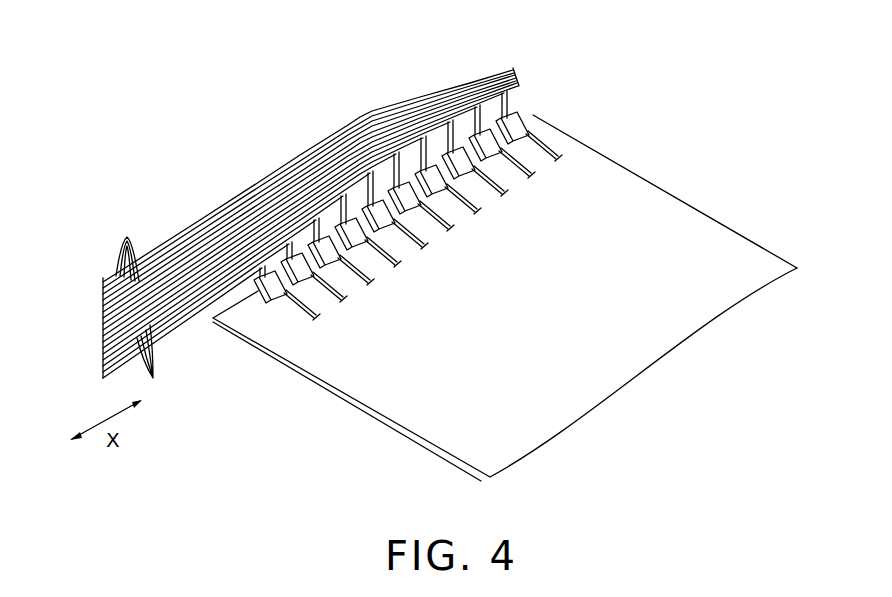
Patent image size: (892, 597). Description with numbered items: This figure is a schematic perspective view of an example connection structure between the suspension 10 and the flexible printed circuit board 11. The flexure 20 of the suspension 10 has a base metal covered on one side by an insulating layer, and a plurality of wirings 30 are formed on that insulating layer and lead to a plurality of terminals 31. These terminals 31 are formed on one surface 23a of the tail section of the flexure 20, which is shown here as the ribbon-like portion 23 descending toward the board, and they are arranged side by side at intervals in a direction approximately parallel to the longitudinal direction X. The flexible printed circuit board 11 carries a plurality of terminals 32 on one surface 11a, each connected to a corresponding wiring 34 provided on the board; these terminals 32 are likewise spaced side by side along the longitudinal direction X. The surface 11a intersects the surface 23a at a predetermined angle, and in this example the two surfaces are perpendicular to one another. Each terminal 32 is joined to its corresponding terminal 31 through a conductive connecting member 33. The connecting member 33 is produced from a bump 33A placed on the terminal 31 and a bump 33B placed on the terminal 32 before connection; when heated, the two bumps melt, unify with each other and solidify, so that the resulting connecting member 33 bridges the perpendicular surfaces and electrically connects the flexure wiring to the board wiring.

The suspension 10 is at (311, 211).
The flexure 20 is at (186, 223).
The wiring portion 23 is at (437, 92).
The surface of tail section 23a is at (487, 100).
The wiring 30 is at (153, 300).
The terminal 31 is at (518, 108).
The terminal 32 is at (533, 137).
The conductive connecting member 33 is at (520, 121).
The bump 33A is at (391, 207).
The bump 33B is at (391, 207).
The wiring 34 is at (314, 302).
The flexible printed circuit board 11 is at (745, 238).
The surface of flexible printed circuit board 11a is at (650, 204).